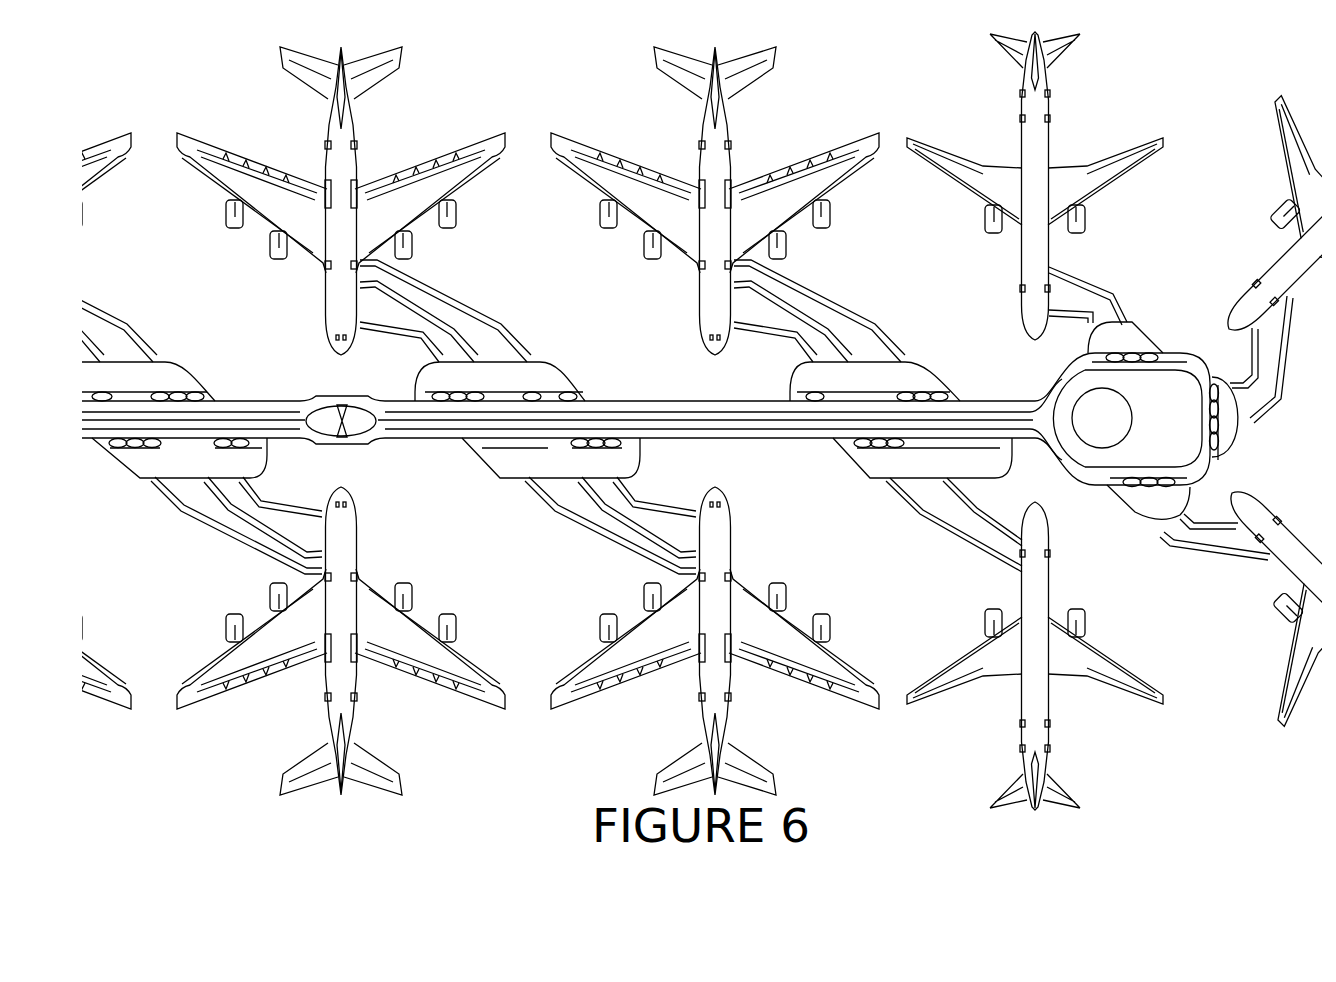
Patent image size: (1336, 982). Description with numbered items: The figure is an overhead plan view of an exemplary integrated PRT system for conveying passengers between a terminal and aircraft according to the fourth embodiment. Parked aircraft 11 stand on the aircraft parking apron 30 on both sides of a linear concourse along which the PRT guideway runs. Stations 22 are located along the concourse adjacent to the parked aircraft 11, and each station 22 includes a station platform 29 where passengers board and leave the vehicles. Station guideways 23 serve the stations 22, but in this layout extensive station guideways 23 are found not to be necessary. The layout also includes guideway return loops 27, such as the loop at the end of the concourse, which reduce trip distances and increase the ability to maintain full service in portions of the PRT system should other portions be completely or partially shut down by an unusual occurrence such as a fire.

The parked aircraft 11 is at (507, 137).
The aircraft parking apron 30 is at (942, 80).
The station 22 is at (560, 373).
The station platform 29 is at (550, 373).
The station guideway 23 is at (650, 429).
The guideway return loop 27 is at (343, 440).